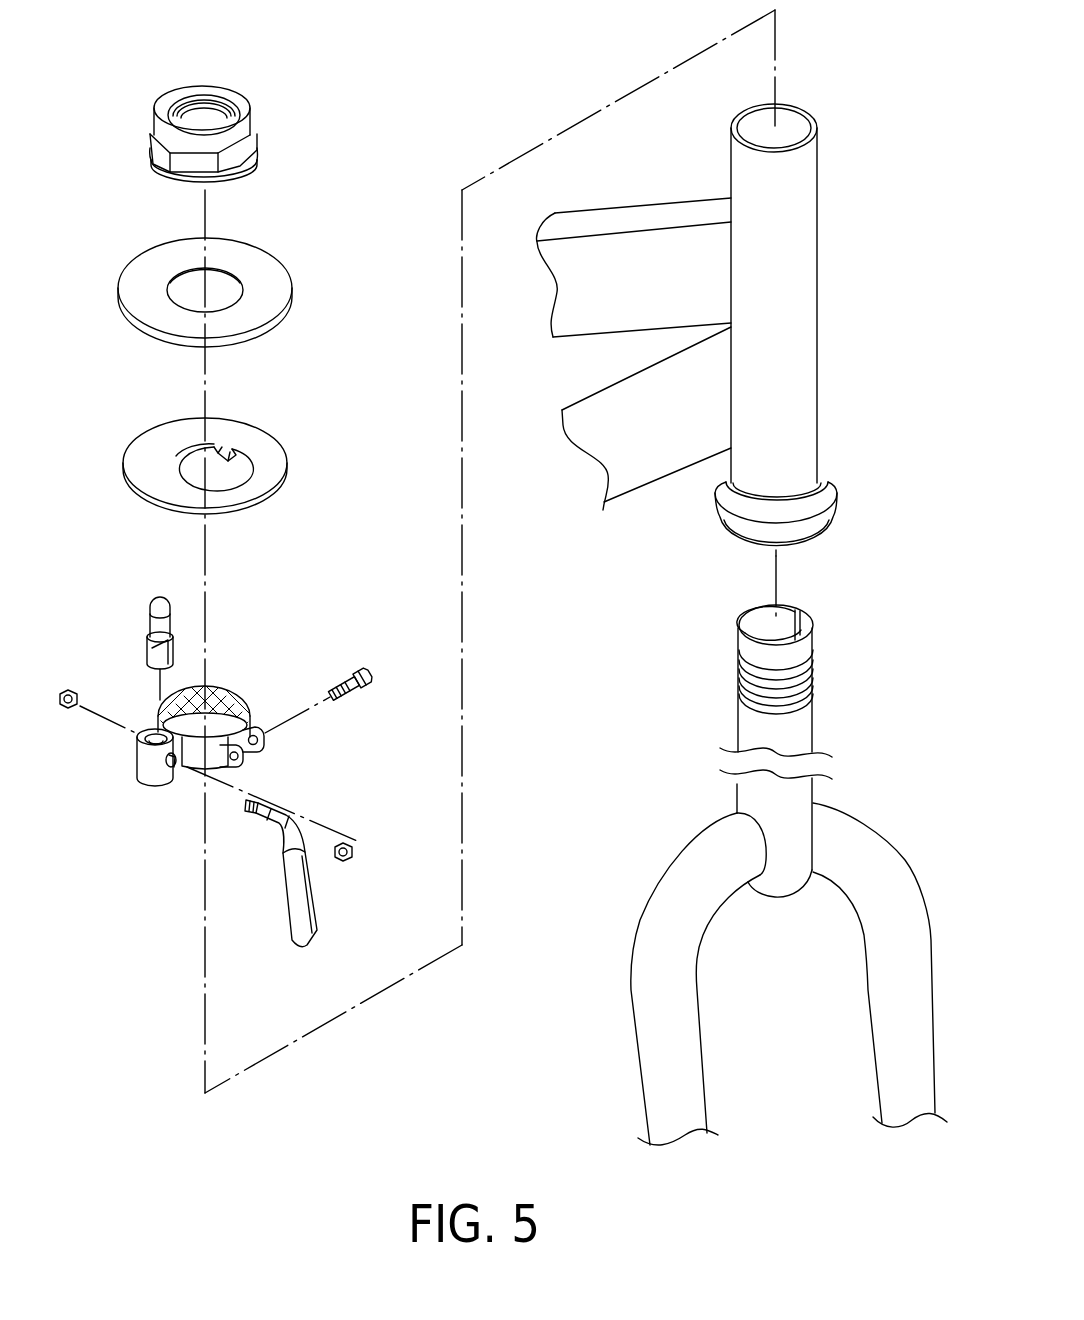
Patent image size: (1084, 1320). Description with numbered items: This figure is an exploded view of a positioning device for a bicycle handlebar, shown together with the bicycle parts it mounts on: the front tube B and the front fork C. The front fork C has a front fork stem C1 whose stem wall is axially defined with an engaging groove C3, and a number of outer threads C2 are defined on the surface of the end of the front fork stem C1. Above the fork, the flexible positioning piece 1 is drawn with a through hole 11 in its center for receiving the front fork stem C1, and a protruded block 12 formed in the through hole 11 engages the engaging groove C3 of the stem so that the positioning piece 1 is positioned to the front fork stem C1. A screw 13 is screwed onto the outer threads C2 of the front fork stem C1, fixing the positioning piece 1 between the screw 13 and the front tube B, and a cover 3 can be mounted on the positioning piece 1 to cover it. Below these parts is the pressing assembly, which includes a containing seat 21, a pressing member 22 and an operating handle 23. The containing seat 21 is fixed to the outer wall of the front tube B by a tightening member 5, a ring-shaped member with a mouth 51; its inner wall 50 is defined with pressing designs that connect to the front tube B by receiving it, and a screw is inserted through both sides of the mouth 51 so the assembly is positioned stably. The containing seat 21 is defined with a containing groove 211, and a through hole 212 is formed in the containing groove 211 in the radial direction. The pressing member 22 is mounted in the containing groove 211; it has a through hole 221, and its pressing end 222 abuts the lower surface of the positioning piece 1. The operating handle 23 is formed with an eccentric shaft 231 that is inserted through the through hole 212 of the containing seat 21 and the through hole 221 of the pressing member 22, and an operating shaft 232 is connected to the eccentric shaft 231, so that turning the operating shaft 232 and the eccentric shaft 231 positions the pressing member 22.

The positioning piece 1 is at (244, 435).
The through hole 11 is at (190, 455).
The protruded block 12 is at (228, 452).
The screw 13 is at (245, 122).
The cover 3 is at (268, 272).
The tightening member 5 is at (230, 718).
The inner wall 50 is at (248, 700).
The mouth 51 is at (250, 722).
The containing seat 21 is at (131, 758).
The containing groove 211 is at (153, 736).
The through hole 212 is at (170, 766).
The pressing member 22 is at (114, 611).
The through hole 221 is at (160, 656).
The pressing end 222 is at (162, 596).
The operating handle 23 is at (268, 892).
The eccentric shaft 231 is at (264, 816).
The operating shaft 232 is at (292, 906).
The front tube B is at (805, 270).
The front fork C is at (798, 837).
The front fork stem C1 is at (742, 730).
The outer threads C2 is at (752, 666).
The engaging groove C3 is at (805, 610).